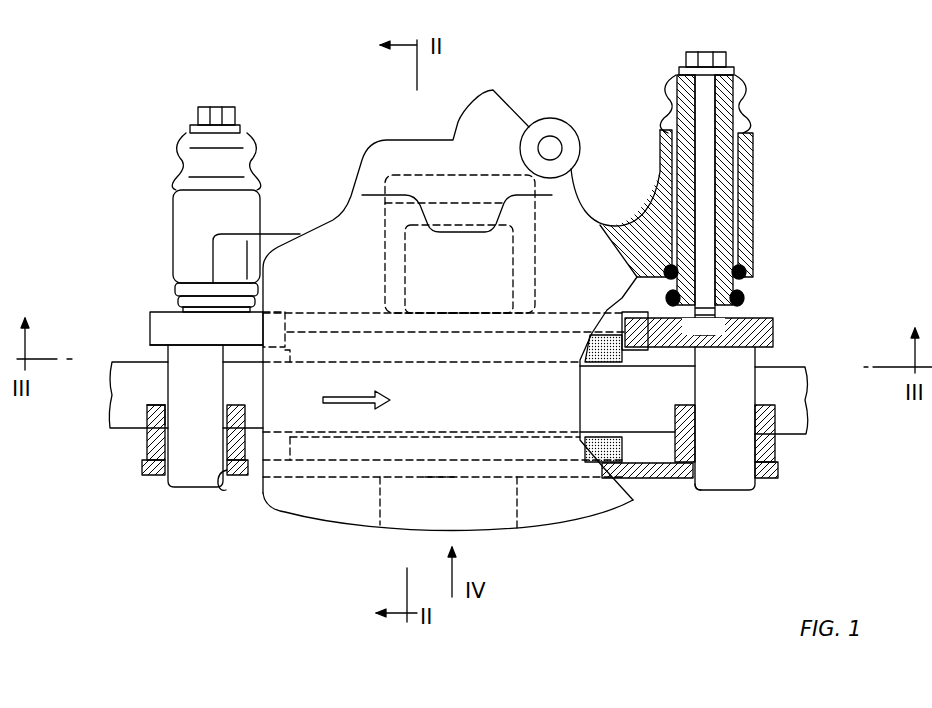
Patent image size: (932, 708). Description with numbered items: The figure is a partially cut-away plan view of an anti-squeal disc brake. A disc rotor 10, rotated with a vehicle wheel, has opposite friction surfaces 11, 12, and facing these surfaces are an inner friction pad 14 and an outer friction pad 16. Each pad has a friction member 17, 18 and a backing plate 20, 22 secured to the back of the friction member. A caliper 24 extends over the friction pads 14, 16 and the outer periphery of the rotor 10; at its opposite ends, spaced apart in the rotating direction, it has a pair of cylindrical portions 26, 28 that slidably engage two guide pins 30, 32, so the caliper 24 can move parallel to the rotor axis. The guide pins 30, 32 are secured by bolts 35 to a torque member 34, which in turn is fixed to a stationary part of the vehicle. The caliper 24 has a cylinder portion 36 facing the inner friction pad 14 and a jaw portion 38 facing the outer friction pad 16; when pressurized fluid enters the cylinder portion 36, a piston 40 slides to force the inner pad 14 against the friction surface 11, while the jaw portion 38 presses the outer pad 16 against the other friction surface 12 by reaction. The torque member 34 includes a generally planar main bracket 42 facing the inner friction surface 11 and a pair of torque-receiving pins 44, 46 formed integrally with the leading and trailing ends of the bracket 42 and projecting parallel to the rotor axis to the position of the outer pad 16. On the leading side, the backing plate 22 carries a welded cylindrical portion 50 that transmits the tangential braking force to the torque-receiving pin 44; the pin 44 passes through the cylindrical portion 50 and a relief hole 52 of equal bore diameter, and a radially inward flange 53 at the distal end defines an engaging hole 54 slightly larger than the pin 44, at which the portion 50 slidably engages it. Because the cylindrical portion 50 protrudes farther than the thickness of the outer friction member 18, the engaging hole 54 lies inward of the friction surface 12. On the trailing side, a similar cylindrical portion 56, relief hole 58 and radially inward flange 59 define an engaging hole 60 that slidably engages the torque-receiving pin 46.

The disc rotor 10 is at (797, 395).
The inner friction surface 11 is at (423, 360).
The outer friction surface 12 is at (420, 435).
The inner friction pad 14 is at (455, 307).
The outer friction pad 16 is at (440, 478).
The friction member 17 is at (600, 350).
The outer friction member 18 is at (600, 448).
The backing plate 20 is at (607, 320).
The backing plate 22 is at (655, 480).
The caliper 24 is at (347, 137).
The cylindrical portion 26 is at (748, 185).
The cylindrical portion 28 is at (178, 220).
The guide pin 30 is at (745, 115).
The guide pin 32 is at (192, 129).
The torque member 34 is at (143, 352).
The bolt 35 is at (725, 58).
The cylinder portion 36 is at (505, 150).
The jaw portion 38 is at (335, 510).
The piston 40 is at (385, 246).
The main bracket 42 is at (165, 312).
The torque-receiving pin 44 is at (182, 480).
The torque-receiving pin 46 is at (748, 488).
The cylindrical portion 50 is at (152, 440).
The relief hole 52 is at (220, 485).
The radially inward flange 53 is at (147, 410).
The engaging hole 54 is at (195, 407).
The cylindrical portion 56 is at (775, 448).
The relief hole 58 is at (700, 492).
The radially inward flange 59 is at (765, 408).
The engaging hole 60 is at (690, 418).